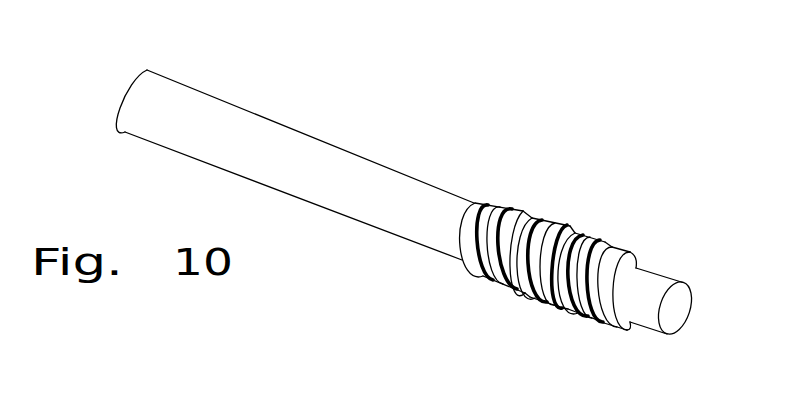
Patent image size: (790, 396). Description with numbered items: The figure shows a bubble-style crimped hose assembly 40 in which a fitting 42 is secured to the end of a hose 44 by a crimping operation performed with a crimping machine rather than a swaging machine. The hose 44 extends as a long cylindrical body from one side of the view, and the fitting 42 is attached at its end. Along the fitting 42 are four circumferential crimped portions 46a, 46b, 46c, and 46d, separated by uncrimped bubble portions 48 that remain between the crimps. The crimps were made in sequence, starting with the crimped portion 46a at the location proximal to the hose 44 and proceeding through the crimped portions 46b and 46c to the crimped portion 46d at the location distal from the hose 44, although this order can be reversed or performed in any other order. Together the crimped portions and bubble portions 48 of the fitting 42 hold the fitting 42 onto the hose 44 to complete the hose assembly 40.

The hose assembly 40 is at (548, 131).
The fitting 42 is at (658, 257).
The hose 44 is at (252, 182).
The crimped portion 46a is at (492, 200).
The crimped portion 46b is at (535, 217).
The crimped portion 46c is at (582, 234).
The crimped portion 46d is at (610, 246).
The bubble portions 48 is at (525, 292).